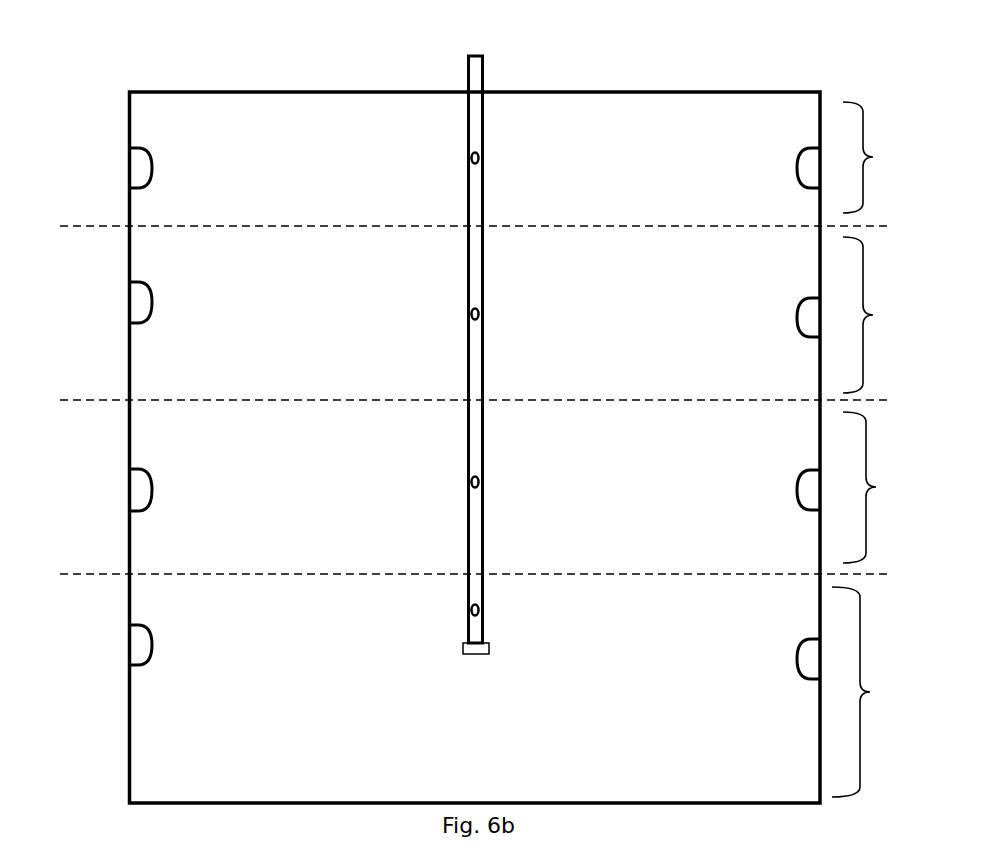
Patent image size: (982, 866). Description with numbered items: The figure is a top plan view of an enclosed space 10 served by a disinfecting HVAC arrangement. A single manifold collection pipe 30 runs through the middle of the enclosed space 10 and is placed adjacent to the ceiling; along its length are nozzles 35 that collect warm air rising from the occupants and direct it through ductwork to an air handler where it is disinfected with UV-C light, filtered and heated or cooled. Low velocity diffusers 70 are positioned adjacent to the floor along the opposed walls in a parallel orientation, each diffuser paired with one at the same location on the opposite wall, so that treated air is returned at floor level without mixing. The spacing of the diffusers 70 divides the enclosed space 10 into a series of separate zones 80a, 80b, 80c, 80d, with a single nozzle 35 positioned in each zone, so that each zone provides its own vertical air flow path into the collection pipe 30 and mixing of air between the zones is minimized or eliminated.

The enclosed space 10 is at (193, 122).
The collection pipe 30 is at (475, 122).
The nozzles 35 is at (483, 160).
The low velocity diffusers 70 is at (140, 168).
The zone 80a is at (873, 157).
The zone 80b is at (873, 315).
The zone 80c is at (876, 487).
The zone 80d is at (870, 692).